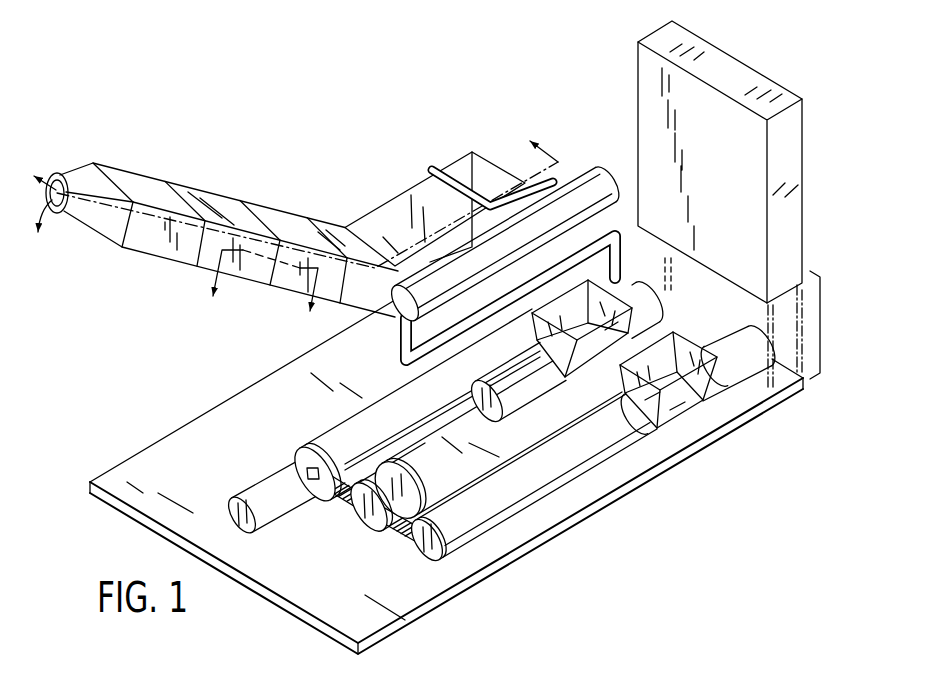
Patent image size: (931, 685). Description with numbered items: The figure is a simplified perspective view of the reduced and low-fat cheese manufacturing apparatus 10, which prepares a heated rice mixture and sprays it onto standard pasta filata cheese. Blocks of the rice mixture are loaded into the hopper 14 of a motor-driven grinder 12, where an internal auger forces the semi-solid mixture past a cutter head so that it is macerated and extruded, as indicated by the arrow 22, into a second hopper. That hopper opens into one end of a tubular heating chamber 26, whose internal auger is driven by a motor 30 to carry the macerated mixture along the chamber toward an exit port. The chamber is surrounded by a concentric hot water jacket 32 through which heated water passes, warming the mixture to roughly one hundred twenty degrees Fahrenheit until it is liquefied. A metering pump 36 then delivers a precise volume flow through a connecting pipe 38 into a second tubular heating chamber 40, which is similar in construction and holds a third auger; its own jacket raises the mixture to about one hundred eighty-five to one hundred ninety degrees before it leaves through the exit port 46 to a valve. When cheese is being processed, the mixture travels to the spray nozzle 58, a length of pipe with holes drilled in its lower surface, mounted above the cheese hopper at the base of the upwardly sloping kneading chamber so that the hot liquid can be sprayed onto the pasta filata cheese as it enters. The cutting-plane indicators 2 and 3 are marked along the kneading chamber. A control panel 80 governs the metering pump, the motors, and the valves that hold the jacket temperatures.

The section line 2- 2 is at (292, 192).
The section line 3- 3 is at (265, 293).
The reduced and low-fat cheese manufacturing apparatus 10 is at (752, 38).
The motor-driven grinder 12 is at (565, 400).
The hopper 14 is at (582, 358).
The arrow 22 is at (680, 341).
The tubular heating chamber 26 is at (552, 501).
The motor 30 is at (393, 527).
The hot water jacket 32 is at (480, 513).
The metering pump 36 is at (363, 520).
The connecting pipe 38 is at (345, 502).
The second tubular heating chamber 40 is at (305, 428).
The exit port 46 is at (616, 232).
The spray nozzle 58 is at (452, 175).
The control panel 80 is at (805, 134).